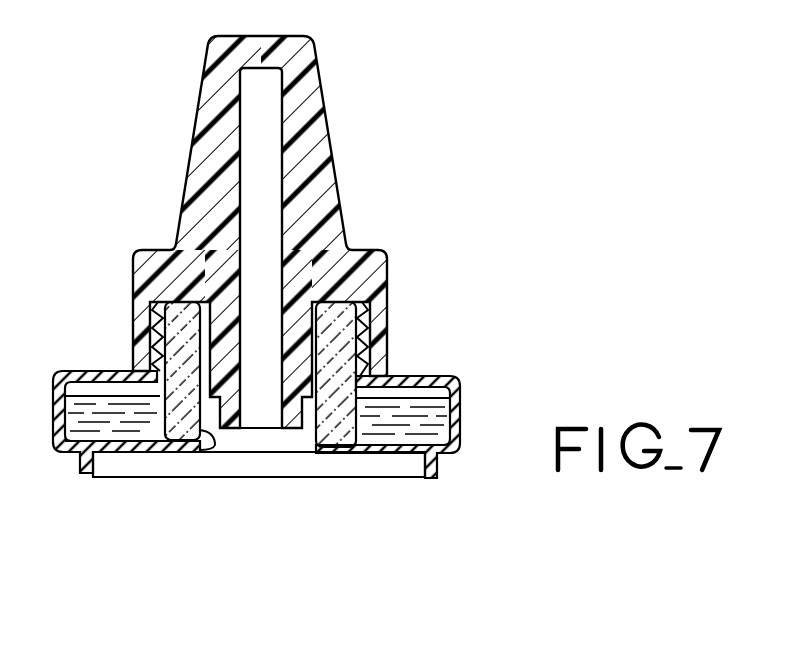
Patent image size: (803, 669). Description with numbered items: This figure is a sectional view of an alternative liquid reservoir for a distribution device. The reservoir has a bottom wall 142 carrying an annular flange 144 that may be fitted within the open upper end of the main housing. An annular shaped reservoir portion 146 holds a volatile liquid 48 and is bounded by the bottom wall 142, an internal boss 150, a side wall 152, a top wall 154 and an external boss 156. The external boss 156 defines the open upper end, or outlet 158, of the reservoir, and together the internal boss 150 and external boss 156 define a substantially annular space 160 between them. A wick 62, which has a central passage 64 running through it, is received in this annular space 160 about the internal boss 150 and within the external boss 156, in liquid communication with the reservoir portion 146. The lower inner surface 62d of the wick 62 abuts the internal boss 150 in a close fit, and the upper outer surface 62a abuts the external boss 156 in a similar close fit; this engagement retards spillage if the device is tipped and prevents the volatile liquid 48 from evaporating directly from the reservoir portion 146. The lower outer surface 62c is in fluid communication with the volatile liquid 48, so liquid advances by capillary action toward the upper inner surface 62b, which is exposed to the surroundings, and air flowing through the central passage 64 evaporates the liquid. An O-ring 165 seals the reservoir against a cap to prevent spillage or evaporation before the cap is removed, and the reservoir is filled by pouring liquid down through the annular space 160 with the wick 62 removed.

The volatile liquid 48 is at (440, 422).
The wick 62 is at (383, 257).
The upper outer surface 62a is at (150, 313).
The upper inner surface 62b is at (238, 372).
The lower outer surface 62c is at (153, 422).
The lower inner surface 62d is at (205, 410).
The central passage 64 is at (257, 322).
The bottom wall 142 is at (362, 452).
The annular flange 144 is at (437, 470).
The reservoir portion 146 is at (428, 392).
The internal boss 150 is at (220, 405).
The side wall 152 is at (462, 395).
The top wall 154 is at (417, 377).
The external boss 156 is at (150, 324).
The outlet 158 is at (301, 392).
The annular space 160 is at (191, 315).
The O-ring 165 is at (276, 415).